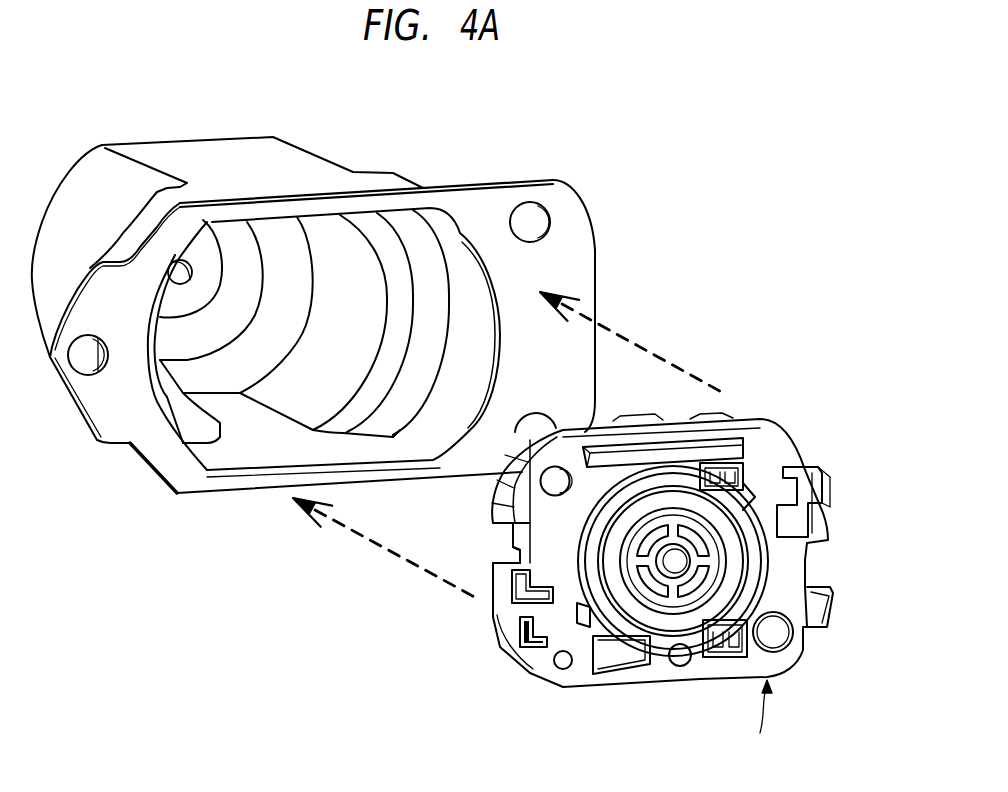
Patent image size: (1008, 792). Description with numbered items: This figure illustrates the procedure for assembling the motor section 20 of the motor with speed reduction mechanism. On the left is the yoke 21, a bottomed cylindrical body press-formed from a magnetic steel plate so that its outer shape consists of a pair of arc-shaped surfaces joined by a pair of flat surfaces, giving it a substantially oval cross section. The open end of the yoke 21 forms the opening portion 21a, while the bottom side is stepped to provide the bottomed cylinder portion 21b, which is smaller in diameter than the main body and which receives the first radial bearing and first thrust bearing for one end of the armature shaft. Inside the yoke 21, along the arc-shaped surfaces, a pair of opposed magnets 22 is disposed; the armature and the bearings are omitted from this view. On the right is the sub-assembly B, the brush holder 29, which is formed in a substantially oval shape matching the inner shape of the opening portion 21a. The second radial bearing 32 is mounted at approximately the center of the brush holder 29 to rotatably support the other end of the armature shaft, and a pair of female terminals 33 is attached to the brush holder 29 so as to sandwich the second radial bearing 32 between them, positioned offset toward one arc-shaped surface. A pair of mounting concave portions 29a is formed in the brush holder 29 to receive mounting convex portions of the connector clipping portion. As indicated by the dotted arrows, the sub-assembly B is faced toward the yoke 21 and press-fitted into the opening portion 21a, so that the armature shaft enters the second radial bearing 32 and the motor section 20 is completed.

The motor section 20 is at (612, 148).
The yoke 21 is at (253, 167).
The opening portion 21a is at (243, 437).
The bottomed cylinder portion 21b is at (196, 277).
The magnet 22 is at (342, 300).
The brush holder 29 is at (770, 447).
The mounting concave portion 29a is at (513, 548).
The second radial bearing 32 is at (692, 560).
The female terminal 33 is at (747, 470).